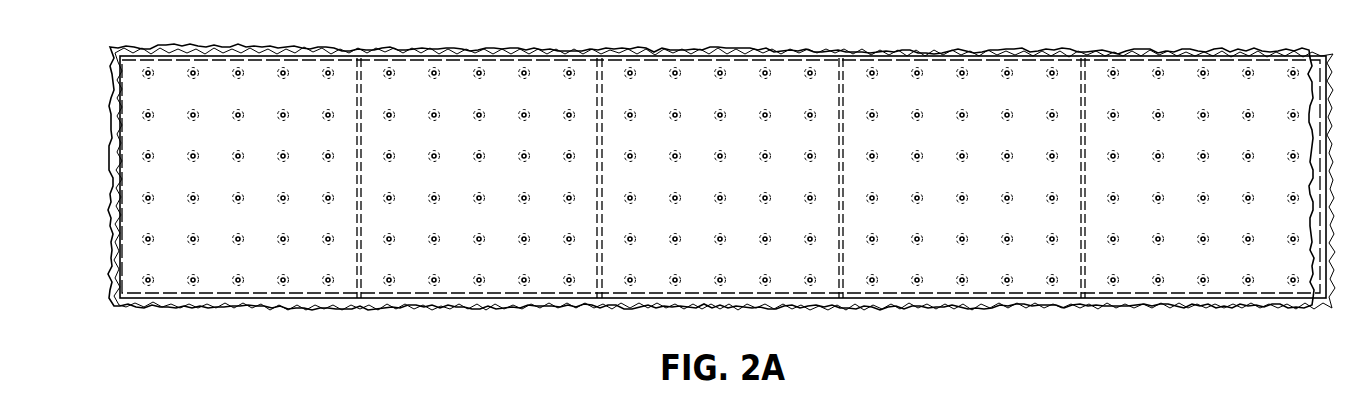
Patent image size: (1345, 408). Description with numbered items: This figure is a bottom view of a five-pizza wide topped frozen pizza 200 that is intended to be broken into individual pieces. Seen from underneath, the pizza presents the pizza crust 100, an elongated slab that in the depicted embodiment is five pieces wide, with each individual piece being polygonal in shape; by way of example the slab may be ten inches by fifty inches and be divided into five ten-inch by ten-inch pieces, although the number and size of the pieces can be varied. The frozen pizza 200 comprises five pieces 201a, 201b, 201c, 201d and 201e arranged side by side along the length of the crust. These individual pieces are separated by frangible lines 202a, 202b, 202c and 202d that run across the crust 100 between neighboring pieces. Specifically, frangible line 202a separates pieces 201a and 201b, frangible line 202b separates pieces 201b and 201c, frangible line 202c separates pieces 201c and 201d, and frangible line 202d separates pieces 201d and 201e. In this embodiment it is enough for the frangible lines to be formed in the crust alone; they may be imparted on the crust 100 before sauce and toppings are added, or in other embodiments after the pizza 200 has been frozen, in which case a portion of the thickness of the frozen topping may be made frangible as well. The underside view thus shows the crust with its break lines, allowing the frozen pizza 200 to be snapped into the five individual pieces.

The pizza crust 100 is at (175, 278).
The five-pizza wide topped frozen pizza 200 is at (1137, 333).
The pizza piece 201a is at (214, 186).
The pizza piece 201b is at (455, 186).
The pizza piece 201c is at (696, 186).
The pizza piece 201d is at (938, 186).
The pizza piece 201e is at (1179, 186).
The frangible line 202a is at (358, 298).
The frangible line 202b is at (598, 298).
The frangible line 202c is at (841, 300).
The frangible line 202d is at (1083, 300).